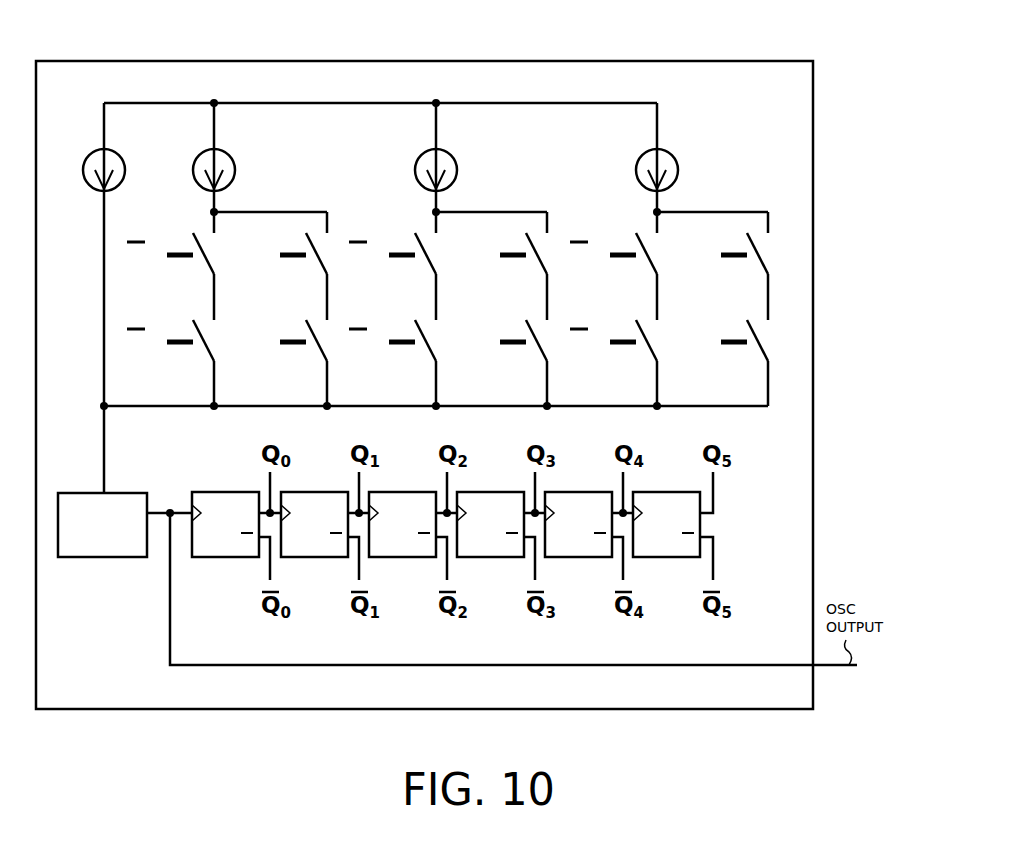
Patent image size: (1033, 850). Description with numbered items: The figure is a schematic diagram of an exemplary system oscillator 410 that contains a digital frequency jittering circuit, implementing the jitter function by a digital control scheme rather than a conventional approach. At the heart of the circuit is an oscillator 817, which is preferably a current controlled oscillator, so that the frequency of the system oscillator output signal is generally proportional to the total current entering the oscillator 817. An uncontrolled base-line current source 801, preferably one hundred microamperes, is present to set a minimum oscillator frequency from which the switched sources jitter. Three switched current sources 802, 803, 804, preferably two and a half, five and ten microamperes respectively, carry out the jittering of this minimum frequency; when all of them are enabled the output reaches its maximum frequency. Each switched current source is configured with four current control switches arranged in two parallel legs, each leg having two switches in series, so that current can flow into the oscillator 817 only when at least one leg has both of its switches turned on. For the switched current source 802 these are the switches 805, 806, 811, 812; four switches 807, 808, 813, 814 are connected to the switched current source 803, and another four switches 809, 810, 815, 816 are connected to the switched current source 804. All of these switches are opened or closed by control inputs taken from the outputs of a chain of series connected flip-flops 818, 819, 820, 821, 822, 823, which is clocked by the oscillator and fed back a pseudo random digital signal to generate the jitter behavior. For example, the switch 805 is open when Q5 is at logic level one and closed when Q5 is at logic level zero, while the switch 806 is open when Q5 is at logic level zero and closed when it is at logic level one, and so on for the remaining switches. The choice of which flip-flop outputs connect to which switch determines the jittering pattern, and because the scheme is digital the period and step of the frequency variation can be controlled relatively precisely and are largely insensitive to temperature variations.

The system oscillator 410 is at (565, 40).
The base-line current source 801 is at (114, 152).
The switched current source 802 is at (224, 152).
The switched current source 803 is at (446, 152).
The switched current source 804 is at (667, 152).
The current control switch 805 is at (170, 267).
The current control switch 806 is at (283, 267).
The current control switch 807 is at (392, 267).
The current control switch 808 is at (503, 267).
The current control switch 809 is at (613, 267).
The current control switch 810 is at (724, 267).
The current control switch 811 is at (170, 353).
The current control switch 812 is at (283, 353).
The current control switch 813 is at (392, 353).
The current control switch 814 is at (503, 353).
The current control switch 815 is at (613, 353).
The current control switch 816 is at (724, 353).
The oscillator 817 is at (100, 557).
The flip-flop 818 is at (225, 557).
The flip-flop 819 is at (314, 557).
The flip-flop 820 is at (402, 557).
The flip-flop 821 is at (490, 557).
The flip-flop 822 is at (578, 557).
The flip-flop 823 is at (666, 557).